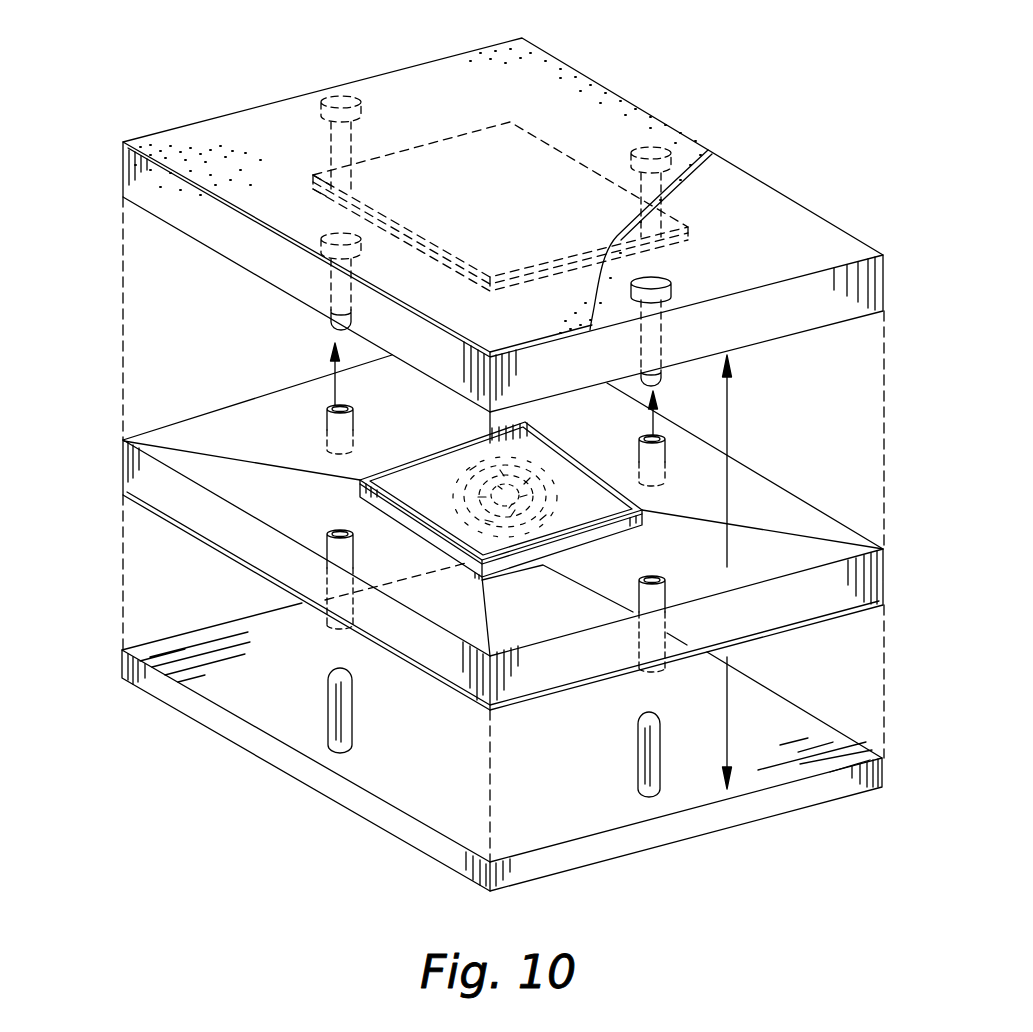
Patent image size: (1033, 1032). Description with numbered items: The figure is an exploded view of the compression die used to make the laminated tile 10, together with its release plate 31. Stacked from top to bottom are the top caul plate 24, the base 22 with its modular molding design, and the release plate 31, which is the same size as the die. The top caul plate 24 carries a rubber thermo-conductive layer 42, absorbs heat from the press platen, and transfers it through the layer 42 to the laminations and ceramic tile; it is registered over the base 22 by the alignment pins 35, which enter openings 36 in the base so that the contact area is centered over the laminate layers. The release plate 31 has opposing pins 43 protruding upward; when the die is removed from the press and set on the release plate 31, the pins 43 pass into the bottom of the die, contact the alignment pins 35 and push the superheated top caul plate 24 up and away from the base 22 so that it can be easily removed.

The laminated tile 10 is at (645, 512).
The base 22 is at (143, 481).
The top caul plate 24 is at (133, 165).
The release plate 31 is at (390, 787).
The alignment pins 35 is at (328, 327).
The alignment sleeves 36 is at (332, 405).
The rubber thermo-conductive layer 42 is at (612, 100).
The opposing pins 43 is at (333, 732).